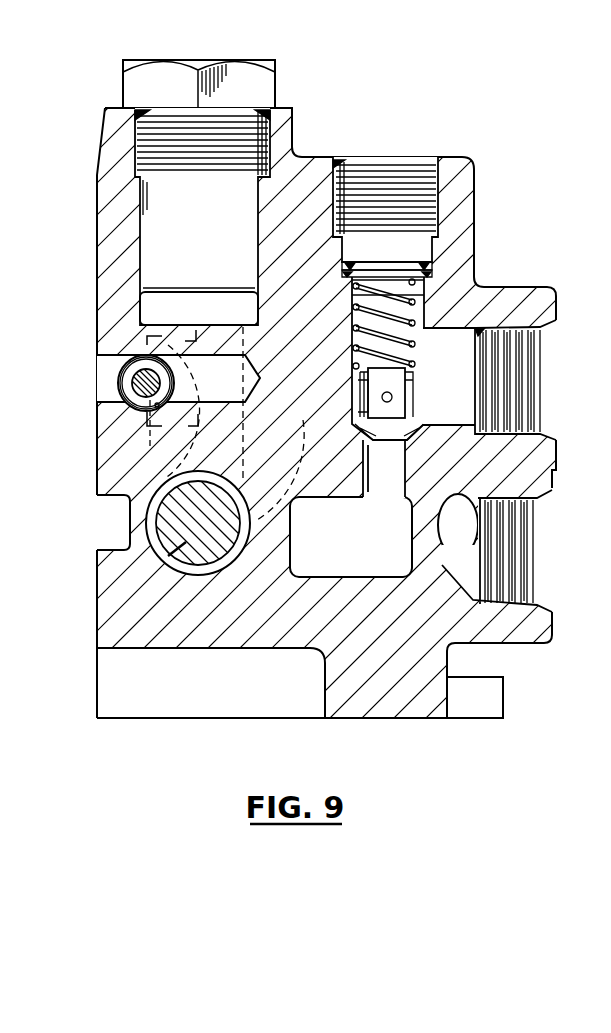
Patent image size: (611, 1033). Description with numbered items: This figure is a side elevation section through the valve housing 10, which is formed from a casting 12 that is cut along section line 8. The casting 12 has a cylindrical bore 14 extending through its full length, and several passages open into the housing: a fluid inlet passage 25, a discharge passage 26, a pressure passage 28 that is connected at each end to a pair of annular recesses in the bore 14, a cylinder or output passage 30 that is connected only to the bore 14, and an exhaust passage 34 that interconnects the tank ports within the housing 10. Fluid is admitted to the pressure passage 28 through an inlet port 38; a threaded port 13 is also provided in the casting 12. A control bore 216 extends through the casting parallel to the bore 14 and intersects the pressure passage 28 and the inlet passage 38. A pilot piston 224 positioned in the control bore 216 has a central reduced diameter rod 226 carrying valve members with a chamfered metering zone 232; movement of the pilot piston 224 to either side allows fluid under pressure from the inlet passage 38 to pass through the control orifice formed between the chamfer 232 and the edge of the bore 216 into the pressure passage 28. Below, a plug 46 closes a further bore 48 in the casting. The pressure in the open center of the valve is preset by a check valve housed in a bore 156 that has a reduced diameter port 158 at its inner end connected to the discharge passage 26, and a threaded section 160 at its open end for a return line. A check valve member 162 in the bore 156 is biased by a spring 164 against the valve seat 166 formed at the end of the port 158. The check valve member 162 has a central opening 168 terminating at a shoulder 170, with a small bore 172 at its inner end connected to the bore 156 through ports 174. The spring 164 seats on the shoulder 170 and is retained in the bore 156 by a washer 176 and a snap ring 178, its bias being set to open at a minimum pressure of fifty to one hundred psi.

The section line 8- 8 is at (198, 18).
The valve housing 10 is at (482, 237).
The casting 12 is at (512, 644).
The threaded port 13 is at (530, 549).
The cylindrical bore 14 is at (220, 573).
The fluid inlet passage 25 is at (96, 520).
The discharge passage 26 is at (362, 546).
The pressure passage 28 is at (224, 317).
The cylinder passage 30 is at (300, 447).
The exhaust passage 34 is at (470, 529).
The inlet port 38 is at (100, 357).
The plug 46 is at (187, 543).
The bore 48 is at (195, 563).
The bore 156 is at (346, 288).
The reduced diameter port 158 is at (362, 468).
The threaded section 160 is at (437, 211).
The check valve member 162 is at (410, 376).
The spring 164 is at (414, 297).
The valve seat 166 is at (408, 427).
The central opening 168 is at (360, 320).
The shoulder 170 is at (359, 374).
The small bore 172 is at (359, 385).
The ports 174 is at (393, 397).
The washer 176 is at (434, 274).
The snap ring 178 is at (433, 266).
The control bore 216 is at (145, 412).
The pilot piston 224 is at (128, 397).
The central reduced diameter rod 226 is at (133, 382).
The chamfered metering zone 232 is at (118, 375).